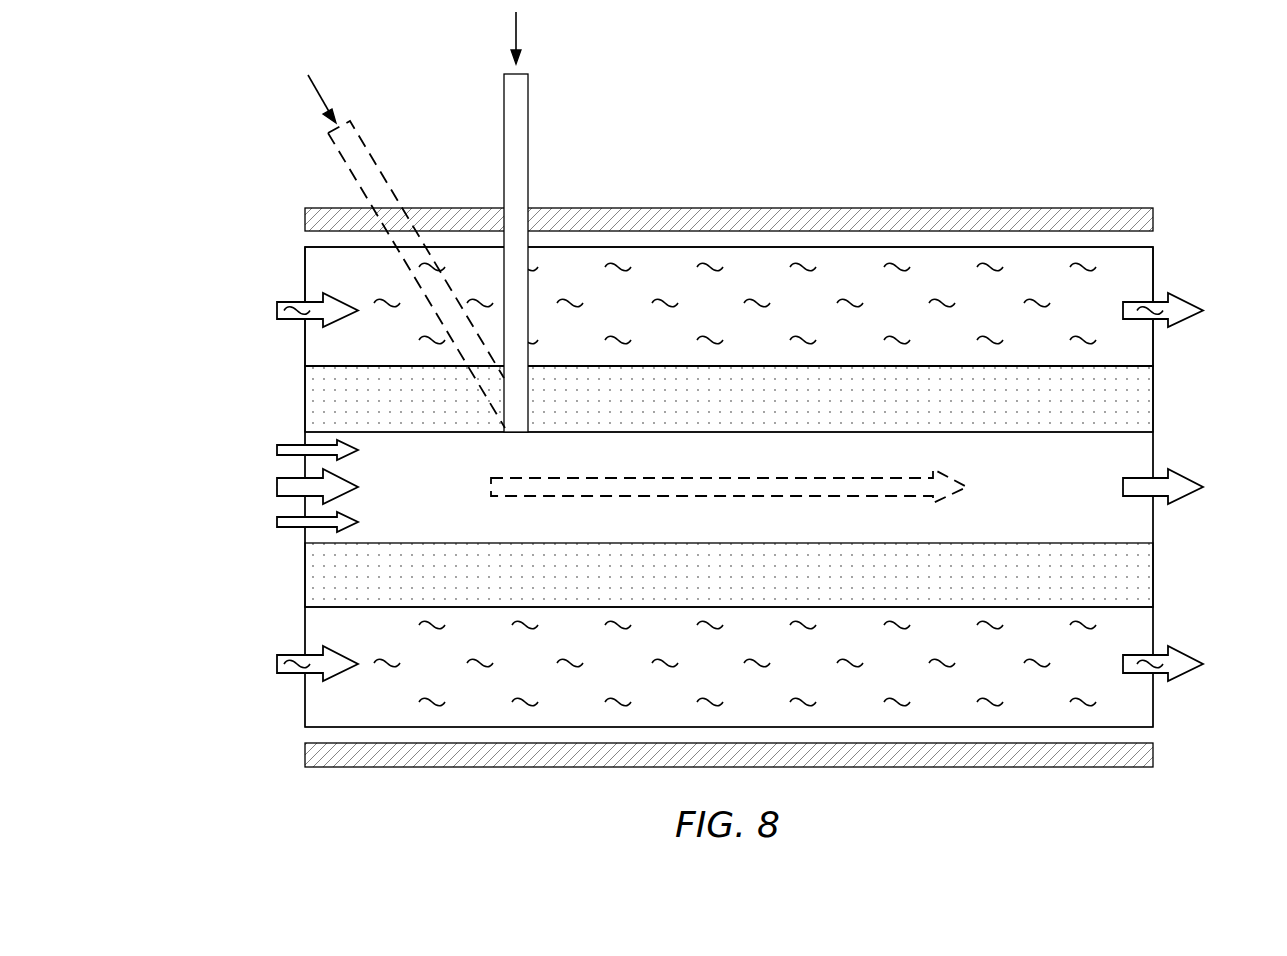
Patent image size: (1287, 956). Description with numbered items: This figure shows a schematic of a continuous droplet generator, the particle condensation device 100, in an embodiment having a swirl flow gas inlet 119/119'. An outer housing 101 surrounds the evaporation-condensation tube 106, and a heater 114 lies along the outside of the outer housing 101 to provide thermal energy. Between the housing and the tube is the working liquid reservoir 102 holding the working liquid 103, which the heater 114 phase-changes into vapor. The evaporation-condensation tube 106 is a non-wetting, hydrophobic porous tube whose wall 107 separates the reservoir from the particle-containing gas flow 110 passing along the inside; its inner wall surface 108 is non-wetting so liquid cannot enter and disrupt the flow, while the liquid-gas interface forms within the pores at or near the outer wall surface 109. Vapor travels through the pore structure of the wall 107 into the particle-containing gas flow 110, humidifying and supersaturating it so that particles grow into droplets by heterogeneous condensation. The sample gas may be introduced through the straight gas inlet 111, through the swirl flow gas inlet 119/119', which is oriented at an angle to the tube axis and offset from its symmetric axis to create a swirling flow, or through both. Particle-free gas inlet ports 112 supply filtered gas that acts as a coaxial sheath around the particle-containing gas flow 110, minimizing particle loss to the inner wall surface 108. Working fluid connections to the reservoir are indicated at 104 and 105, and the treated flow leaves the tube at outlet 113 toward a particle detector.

The particle condensation device 100 is at (277, 170).
The outer housing 101 is at (277, 283).
The working liquid reservoir 102 is at (1146, 267).
The working liquid 103 is at (803, 263).
The fluid inlet 104 is at (276, 311).
The fluid outlet 105 is at (1190, 300).
The evaporation-condensation tube 106 is at (277, 420).
The wall of the evaporation-condensation tube 107 is at (1146, 395).
The inner wall surface 108 is at (430, 433).
The outer wall surface 109 is at (562, 366).
The particle-containing gas flow 110 is at (731, 477).
The gas inlet 111 is at (276, 486).
The particle-free gas inlet port 112 is at (276, 450).
The gas outlet 113 is at (1190, 478).
The heater 114 is at (1001, 208).
The swirl flow gas inlet 119 is at (554, 253).
The swirl flow gas inlet 119' is at (416, 274).